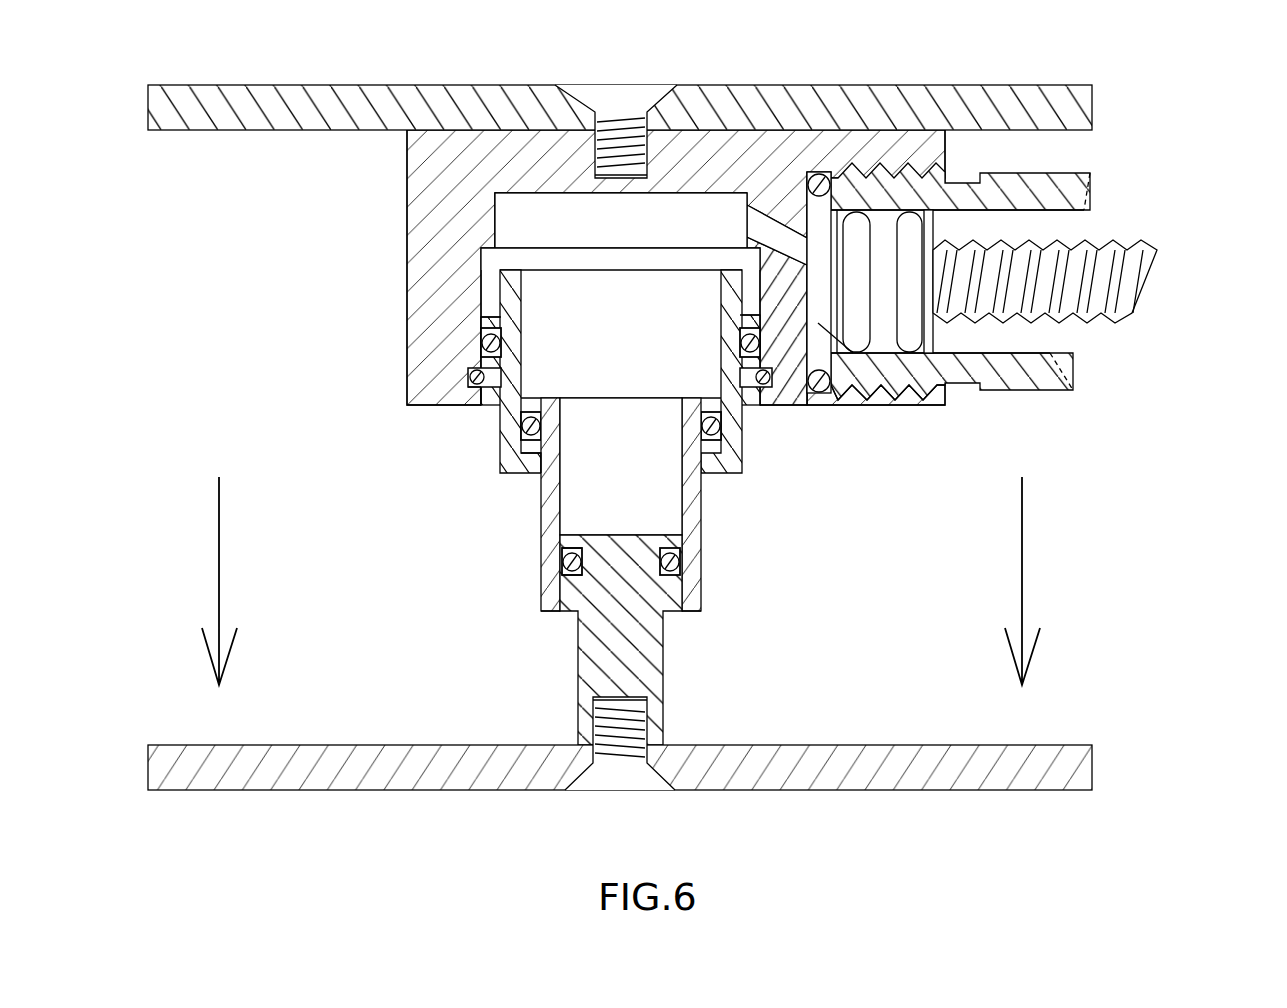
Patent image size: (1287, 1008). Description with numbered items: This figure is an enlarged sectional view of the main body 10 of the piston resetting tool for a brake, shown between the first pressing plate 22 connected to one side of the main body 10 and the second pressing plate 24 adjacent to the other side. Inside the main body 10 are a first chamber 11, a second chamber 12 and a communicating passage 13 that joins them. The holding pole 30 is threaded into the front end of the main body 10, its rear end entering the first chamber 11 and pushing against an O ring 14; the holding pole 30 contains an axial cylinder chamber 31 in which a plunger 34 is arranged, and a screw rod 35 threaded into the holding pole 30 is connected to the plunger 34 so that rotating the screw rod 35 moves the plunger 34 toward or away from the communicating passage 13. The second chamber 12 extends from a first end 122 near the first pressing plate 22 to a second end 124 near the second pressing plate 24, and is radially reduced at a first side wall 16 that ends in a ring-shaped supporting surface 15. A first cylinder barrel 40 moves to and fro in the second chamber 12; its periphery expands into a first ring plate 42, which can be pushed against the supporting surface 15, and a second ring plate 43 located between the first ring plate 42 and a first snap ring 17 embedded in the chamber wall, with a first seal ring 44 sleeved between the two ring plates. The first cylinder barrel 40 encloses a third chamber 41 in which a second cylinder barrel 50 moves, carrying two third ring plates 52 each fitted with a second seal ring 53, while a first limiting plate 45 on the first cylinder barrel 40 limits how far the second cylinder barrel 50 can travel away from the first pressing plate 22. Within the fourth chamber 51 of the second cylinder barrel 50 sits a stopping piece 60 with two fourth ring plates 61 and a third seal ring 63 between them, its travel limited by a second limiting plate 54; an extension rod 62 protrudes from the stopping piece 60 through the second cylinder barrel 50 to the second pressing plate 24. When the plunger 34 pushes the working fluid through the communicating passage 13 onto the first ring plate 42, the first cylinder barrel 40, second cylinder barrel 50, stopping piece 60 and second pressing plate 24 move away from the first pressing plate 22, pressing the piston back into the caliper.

The main body 10 is at (928, 147).
The first chamber 11 is at (897, 387).
The second chamber 12 is at (665, 202).
The communicating passage 13 is at (773, 227).
The O ring 14 is at (818, 380).
The supporting surface 15 is at (485, 243).
The first side wall 16 is at (493, 215).
The first snap ring 17 is at (478, 383).
The first pressing plate 22 is at (1068, 108).
The second pressing plate 24 is at (1070, 770).
The holding pole 30 is at (1068, 188).
The cylinder chamber 31 is at (1063, 227).
The plunger 34 is at (890, 312).
The screw rod 35 is at (1127, 273).
The first cylinder barrel 40 is at (510, 300).
The third chamber 41 is at (708, 368).
The first ring plate 42 is at (481, 325).
The second ring plate 43 is at (481, 362).
The first seal ring 44 is at (481, 343).
The first limiting plate 45 is at (528, 463).
The second cylinder barrel 50 is at (690, 550).
The fourth chamber 51 is at (665, 513).
The third ring plates 52 is at (527, 453).
The second seal ring 53 is at (522, 445).
The second limiting plate 54 is at (680, 598).
The stopping piece 60 is at (630, 590).
The fourth ring plates 61 is at (570, 585).
The extension rod 62 is at (587, 687).
The third seal ring 63 is at (567, 571).
The first end 122 is at (578, 193).
The second end 124 is at (480, 372).